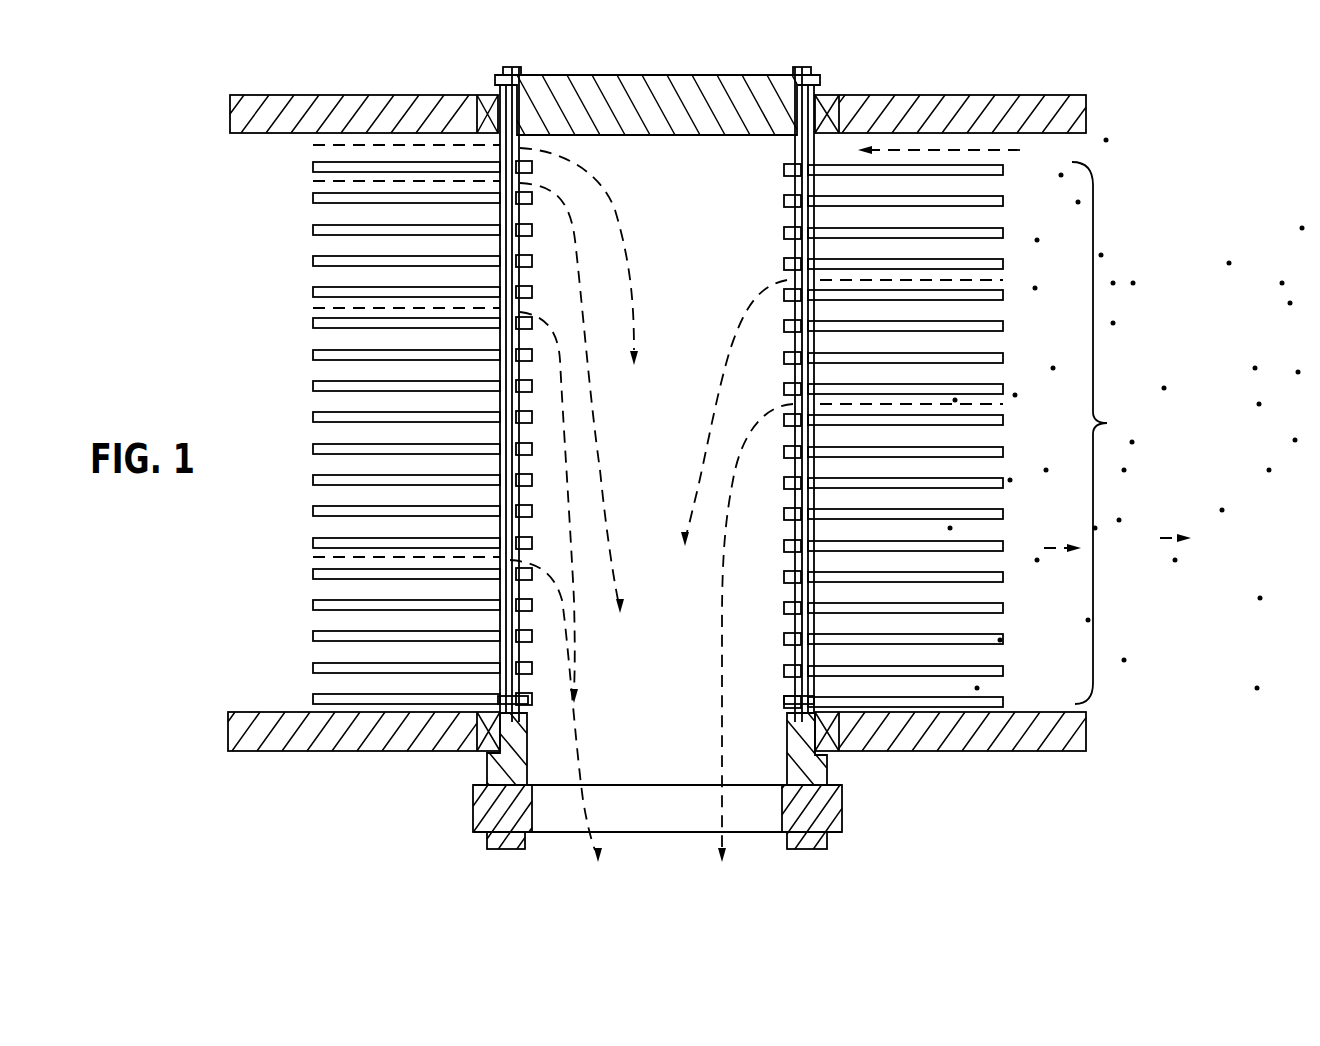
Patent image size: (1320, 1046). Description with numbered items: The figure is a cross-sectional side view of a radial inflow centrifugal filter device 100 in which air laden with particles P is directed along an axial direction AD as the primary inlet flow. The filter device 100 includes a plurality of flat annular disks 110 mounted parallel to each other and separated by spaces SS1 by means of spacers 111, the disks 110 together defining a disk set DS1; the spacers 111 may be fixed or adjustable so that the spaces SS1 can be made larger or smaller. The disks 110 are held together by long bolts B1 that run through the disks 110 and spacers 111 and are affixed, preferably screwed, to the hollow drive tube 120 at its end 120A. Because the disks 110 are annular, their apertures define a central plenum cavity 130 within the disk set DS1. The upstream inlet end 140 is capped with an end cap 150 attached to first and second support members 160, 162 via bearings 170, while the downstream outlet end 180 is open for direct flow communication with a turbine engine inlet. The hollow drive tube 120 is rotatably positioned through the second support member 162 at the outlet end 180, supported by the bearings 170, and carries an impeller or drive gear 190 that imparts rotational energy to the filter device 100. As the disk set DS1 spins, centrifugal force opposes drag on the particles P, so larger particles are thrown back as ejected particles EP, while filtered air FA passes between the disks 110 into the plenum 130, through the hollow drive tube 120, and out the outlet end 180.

The radial inflow centrifugal filter device 100 is at (1141, 127).
The disks 110 is at (313, 667).
The spacers 111 is at (788, 254).
The hollow drive tube 120 is at (485, 768).
The end of hollow drive tube 120A is at (517, 728).
The plenum cavity 130 is at (690, 605).
The inlet end 140 is at (820, 93).
The end cap 150 is at (632, 76).
The first support member 160 is at (318, 95).
The second support member 162 is at (348, 751).
The bearings 170 is at (497, 96).
The outlet end 180 is at (755, 847).
The impeller or drive gear 190 is at (475, 818).
The long bolts B1 is at (511, 67).
The spaces SS1 is at (658, 435).
The axial direction AD is at (1008, 160).
The disk set DS1 is at (1115, 433).
The particles P is at (1168, 327).
The ejected particles EP is at (1130, 586).
The filtered air FA is at (713, 838).